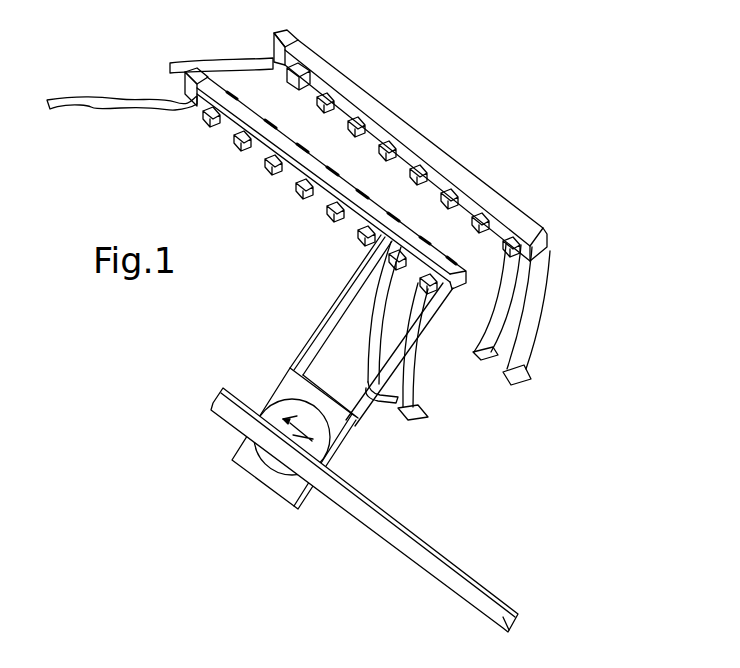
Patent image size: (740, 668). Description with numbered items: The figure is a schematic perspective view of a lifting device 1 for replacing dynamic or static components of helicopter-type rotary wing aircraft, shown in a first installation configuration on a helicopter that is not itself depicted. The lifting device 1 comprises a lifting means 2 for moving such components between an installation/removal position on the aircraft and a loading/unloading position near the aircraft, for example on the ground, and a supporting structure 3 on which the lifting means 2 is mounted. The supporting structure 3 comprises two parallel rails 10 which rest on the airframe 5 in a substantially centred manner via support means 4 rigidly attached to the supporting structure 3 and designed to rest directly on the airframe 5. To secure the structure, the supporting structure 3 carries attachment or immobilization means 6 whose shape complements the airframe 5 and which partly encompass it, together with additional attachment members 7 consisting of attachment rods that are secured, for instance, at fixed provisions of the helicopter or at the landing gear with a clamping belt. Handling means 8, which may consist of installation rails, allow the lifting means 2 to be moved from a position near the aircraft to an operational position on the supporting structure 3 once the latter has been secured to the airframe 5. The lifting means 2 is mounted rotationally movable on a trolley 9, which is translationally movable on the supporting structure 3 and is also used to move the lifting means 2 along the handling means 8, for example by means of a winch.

The lifting device 1 is at (553, 153).
The lifting means 2 is at (212, 420).
The supporting structure 3 is at (416, 126).
The support means 4 is at (234, 138).
The airframe 5 is at (461, 339).
The attachment or immobilization means 6 is at (514, 372).
The additional attachment members 7 is at (115, 102).
The handling means 8 is at (300, 333).
The trolley 9 is at (241, 463).
The parallel rails 10 is at (340, 84).